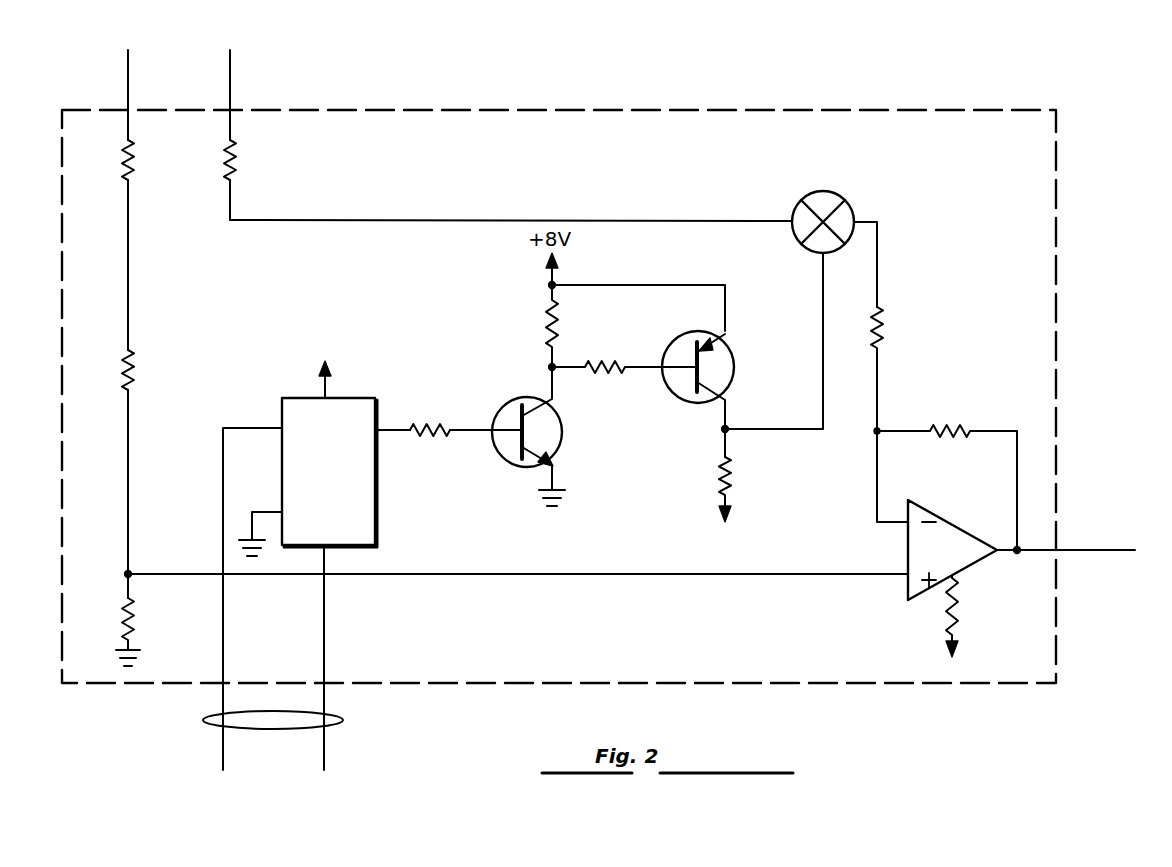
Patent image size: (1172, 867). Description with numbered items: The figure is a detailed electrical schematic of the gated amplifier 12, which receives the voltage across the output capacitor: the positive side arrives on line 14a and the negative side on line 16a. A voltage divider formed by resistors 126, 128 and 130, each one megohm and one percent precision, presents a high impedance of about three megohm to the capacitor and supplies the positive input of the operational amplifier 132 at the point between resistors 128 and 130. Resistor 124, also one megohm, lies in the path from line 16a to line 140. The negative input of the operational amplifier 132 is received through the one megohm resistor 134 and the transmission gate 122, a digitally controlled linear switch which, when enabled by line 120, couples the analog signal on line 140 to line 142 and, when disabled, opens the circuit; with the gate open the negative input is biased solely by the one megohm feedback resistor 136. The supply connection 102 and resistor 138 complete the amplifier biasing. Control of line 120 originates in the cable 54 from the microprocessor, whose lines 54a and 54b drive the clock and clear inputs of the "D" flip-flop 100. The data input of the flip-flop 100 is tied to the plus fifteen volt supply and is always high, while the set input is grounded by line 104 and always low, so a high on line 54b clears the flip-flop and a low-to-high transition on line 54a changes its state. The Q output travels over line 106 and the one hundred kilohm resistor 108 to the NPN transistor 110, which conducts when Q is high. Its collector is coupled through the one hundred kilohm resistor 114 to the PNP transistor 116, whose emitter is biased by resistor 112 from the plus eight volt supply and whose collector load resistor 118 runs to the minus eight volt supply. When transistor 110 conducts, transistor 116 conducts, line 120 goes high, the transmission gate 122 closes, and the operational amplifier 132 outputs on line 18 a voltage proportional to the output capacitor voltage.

The gated amplifier 12 is at (983, 112).
The line 14a is at (128, 63).
The line 16a is at (230, 63).
The line 18 is at (1105, 550).
The cable 54 is at (205, 720).
The line 54a is at (324, 752).
The line 54b is at (223, 752).
The "D" flip-flop 100 is at (378, 492).
The D input supply connection 102 is at (320, 390).
The line 104 is at (266, 510).
The line 106 is at (390, 432).
The resistor 108 is at (428, 420).
The NPN transistor 110 is at (565, 433).
The resistor 112 is at (548, 313).
The resistor 114 is at (597, 358).
The PNP transistor 116 is at (736, 370).
The load resistor 118 is at (738, 468).
The line 120 is at (823, 292).
The transmission gate 122 is at (812, 195).
The resistor 124 is at (236, 157).
The resistor 126 is at (134, 157).
The resistor 128 is at (134, 368).
The resistor 130 is at (134, 615).
The operational amplifier 132 is at (953, 526).
The resistor 134 is at (883, 318).
The resistor 136 is at (945, 425).
The resistor 138 is at (958, 622).
The line 140 is at (686, 218).
The line 142 is at (880, 243).